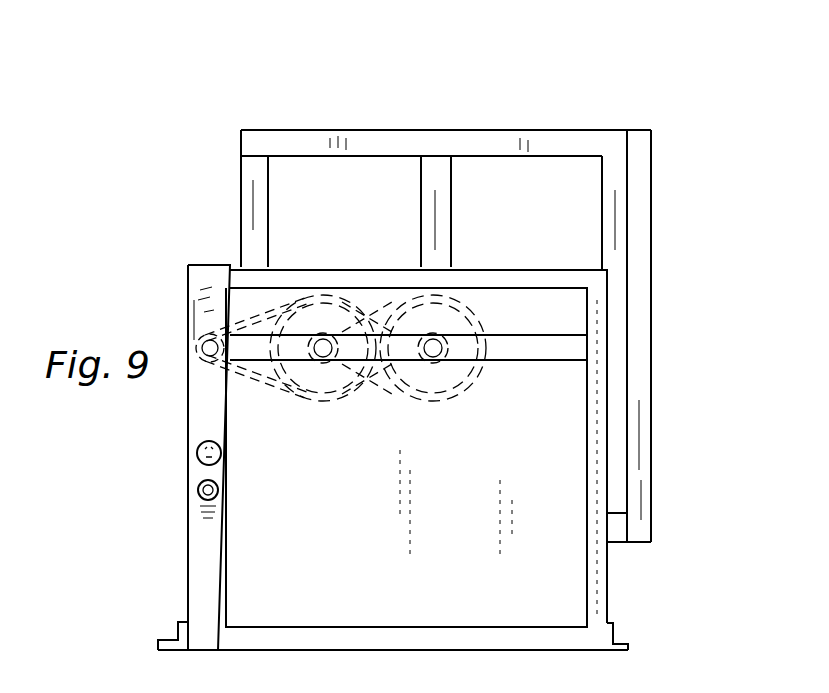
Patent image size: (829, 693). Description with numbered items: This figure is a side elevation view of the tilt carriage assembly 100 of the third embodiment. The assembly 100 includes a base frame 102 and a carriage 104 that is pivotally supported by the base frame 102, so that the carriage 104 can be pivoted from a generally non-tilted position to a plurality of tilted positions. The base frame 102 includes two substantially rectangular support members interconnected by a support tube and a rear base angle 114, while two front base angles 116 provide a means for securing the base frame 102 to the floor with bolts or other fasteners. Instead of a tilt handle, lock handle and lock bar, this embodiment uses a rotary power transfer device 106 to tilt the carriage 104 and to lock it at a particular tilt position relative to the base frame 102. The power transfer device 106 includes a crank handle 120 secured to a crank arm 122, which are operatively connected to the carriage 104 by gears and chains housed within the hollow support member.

The tilt carriage assembly 100 is at (688, 146).
The base frame 102 is at (607, 571).
The carriage 104 is at (648, 326).
The rotary power transfer device 106 is at (318, 403).
The rear base angle 114 is at (169, 644).
The front base angle 116 is at (617, 643).
The crank handle 120 is at (207, 489).
The crank arm 122 is at (205, 403).